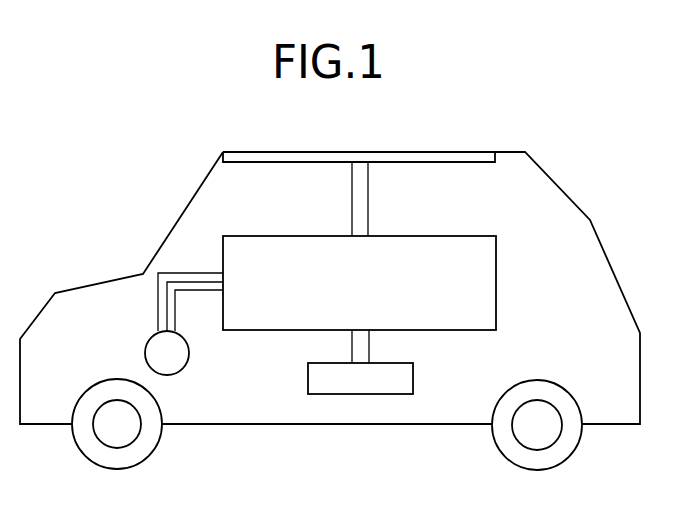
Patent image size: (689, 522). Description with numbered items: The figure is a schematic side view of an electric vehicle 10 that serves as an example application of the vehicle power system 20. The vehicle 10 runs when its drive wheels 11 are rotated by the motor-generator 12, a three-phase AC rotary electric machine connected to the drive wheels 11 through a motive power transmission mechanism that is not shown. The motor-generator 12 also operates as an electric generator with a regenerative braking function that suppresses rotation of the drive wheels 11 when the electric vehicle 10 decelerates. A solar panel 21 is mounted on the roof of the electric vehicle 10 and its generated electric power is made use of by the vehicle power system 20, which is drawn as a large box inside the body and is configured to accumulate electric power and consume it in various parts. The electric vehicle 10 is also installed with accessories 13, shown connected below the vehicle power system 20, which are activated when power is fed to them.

The electric vehicle 10 is at (543, 171).
The drive wheels 11 is at (78, 432).
The motor-generator 12 is at (145, 351).
The accessories 13 is at (414, 382).
The vehicle power system 20 is at (498, 279).
The solar panel 21 is at (440, 152).